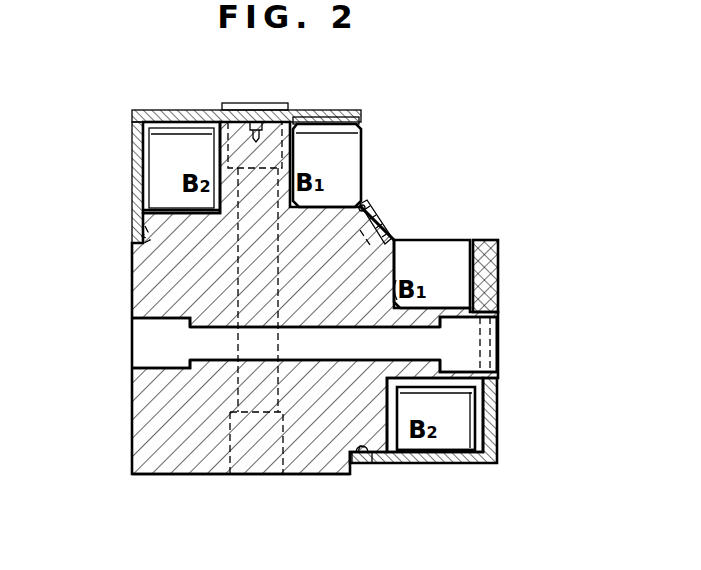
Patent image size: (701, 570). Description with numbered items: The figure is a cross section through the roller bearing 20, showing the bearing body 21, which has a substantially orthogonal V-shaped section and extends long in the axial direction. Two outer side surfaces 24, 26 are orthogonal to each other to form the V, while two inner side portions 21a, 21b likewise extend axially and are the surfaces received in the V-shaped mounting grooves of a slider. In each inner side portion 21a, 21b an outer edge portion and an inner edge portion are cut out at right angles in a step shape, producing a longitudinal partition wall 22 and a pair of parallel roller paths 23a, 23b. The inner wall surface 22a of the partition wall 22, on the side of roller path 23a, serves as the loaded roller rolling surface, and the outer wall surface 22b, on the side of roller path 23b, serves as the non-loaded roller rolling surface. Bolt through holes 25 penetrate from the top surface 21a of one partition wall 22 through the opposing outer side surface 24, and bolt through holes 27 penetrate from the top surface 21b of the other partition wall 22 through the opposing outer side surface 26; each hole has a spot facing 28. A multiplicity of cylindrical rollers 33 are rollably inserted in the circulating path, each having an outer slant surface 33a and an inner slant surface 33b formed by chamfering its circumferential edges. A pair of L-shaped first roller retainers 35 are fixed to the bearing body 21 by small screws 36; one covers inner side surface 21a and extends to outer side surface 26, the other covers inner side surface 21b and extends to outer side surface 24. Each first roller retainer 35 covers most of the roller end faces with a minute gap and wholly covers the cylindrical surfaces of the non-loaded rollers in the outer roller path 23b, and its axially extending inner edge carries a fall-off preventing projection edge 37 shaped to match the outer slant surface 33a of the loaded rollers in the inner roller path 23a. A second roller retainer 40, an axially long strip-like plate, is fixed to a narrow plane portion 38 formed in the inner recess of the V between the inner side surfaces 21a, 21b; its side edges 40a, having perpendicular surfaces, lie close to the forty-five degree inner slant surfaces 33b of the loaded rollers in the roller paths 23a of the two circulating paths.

The roller bearing 20 is at (465, 138).
The bearing body 21 is at (140, 424).
The inner side portion 21a is at (495, 318).
The inner side portion 21b is at (268, 102).
The partition wall 22 is at (224, 120).
The inner wall surface 22a is at (294, 152).
The outer wall surface 22b is at (153, 146).
The roller path 23a is at (355, 205).
The roller path 23b is at (143, 188).
The outer side surface 24 is at (133, 243).
The bolt through hole 25 is at (200, 357).
The outer side surface 26 is at (302, 474).
The bolt through hole 27 is at (240, 382).
The spot facing 28 is at (278, 122).
The cylindrical roller 33 is at (150, 162).
The outer slant surface 33a is at (362, 132).
The inner slant surface 33b is at (372, 212).
The first roller retainer 35 is at (137, 110).
The small screw 36 is at (356, 466).
The fall-off preventing projection edge 37 is at (358, 118).
The plane portion 38 is at (398, 258).
The second roller retainer 40 is at (362, 208).
The side edge 40a is at (408, 252).